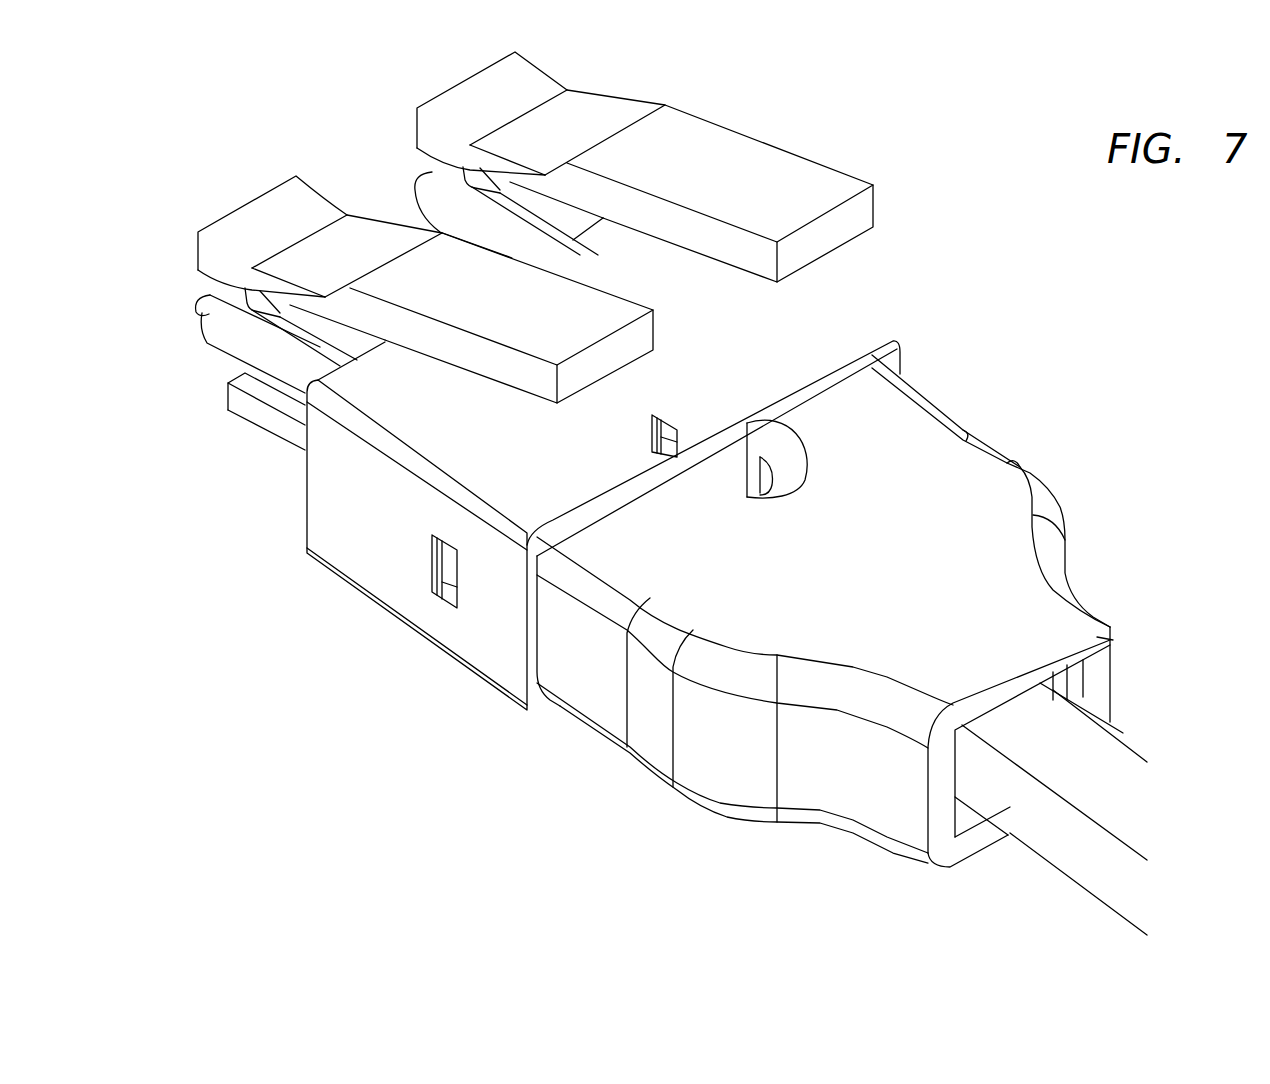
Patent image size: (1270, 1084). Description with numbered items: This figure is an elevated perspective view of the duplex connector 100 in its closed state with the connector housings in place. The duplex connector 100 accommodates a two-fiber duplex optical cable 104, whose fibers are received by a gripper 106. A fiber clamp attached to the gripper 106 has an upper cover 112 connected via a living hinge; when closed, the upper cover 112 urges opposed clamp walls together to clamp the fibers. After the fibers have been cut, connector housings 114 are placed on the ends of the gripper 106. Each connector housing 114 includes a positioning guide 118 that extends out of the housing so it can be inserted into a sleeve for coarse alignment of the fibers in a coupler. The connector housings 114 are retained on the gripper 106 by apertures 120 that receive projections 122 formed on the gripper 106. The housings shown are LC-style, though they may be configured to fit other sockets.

The duplex connector 100 is at (1010, 341).
The duplex optical cable 104 is at (1107, 767).
The gripper 106 is at (727, 765).
The upper cover 112 is at (1110, 637).
The connector housing 114 is at (847, 342).
The positioning guide 118 is at (438, 203).
The aperture 120 is at (648, 436).
The projection 122 is at (672, 447).